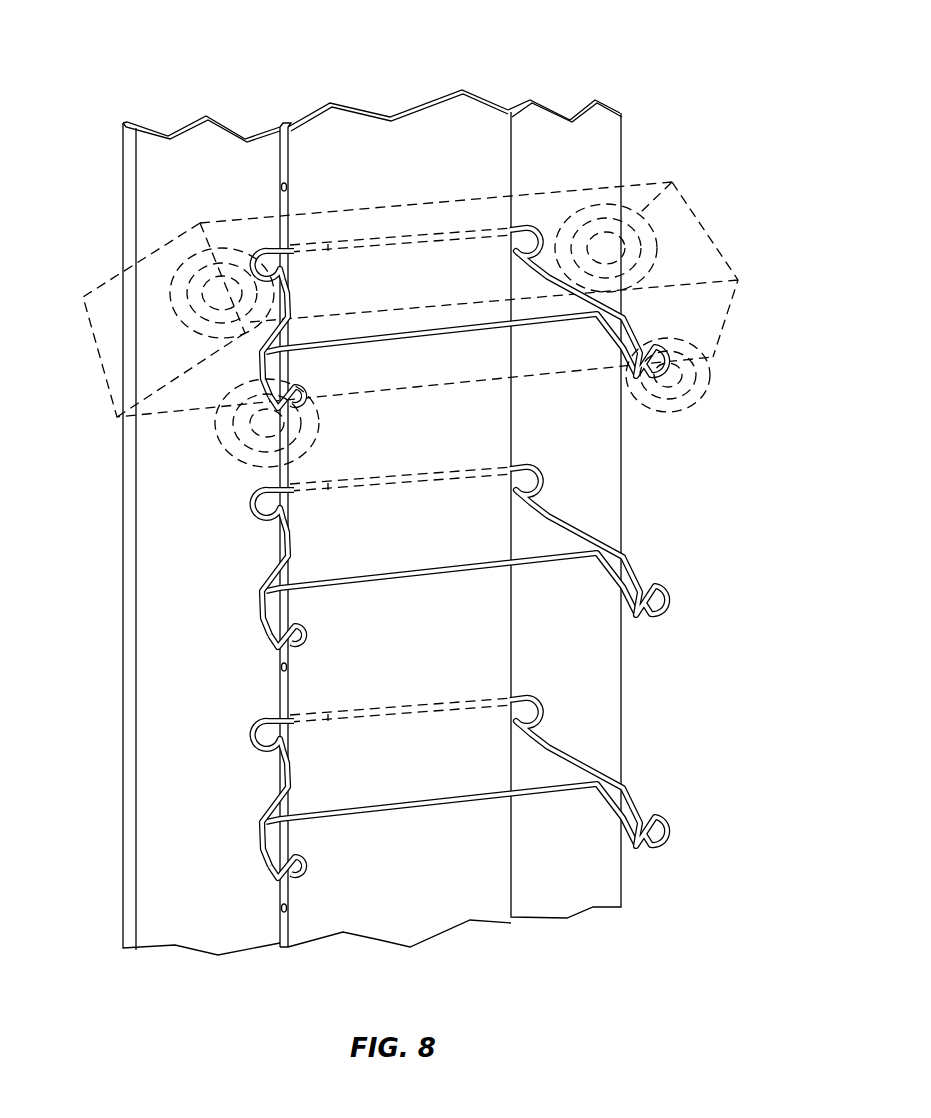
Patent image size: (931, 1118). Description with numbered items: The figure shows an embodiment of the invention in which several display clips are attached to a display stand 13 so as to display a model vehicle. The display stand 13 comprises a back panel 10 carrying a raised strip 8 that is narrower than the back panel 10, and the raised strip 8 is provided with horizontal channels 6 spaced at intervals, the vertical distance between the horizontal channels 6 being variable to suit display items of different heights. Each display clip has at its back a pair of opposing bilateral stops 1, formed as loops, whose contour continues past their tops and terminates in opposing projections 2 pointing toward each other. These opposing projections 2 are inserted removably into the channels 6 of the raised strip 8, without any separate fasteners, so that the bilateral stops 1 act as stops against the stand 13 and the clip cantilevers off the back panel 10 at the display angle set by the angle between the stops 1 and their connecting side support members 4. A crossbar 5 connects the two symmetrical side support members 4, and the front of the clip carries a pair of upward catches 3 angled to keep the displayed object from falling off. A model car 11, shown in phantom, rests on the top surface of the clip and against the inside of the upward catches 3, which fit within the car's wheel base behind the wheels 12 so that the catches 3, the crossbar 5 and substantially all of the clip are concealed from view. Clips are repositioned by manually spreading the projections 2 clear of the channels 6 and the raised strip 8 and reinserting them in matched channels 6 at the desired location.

The bilateral stops 1 is at (257, 499).
The opposing projections 2 is at (328, 483).
The upward catches 3 is at (292, 624).
The side support member 4 is at (275, 559).
The crossbar 5 is at (403, 575).
The horizontal channels 6 is at (282, 186).
The raised strip 8 is at (368, 142).
The back panel 10 is at (183, 178).
The model car 11 is at (698, 215).
The wheels 12 is at (182, 262).
The display stand 13 is at (566, 47).